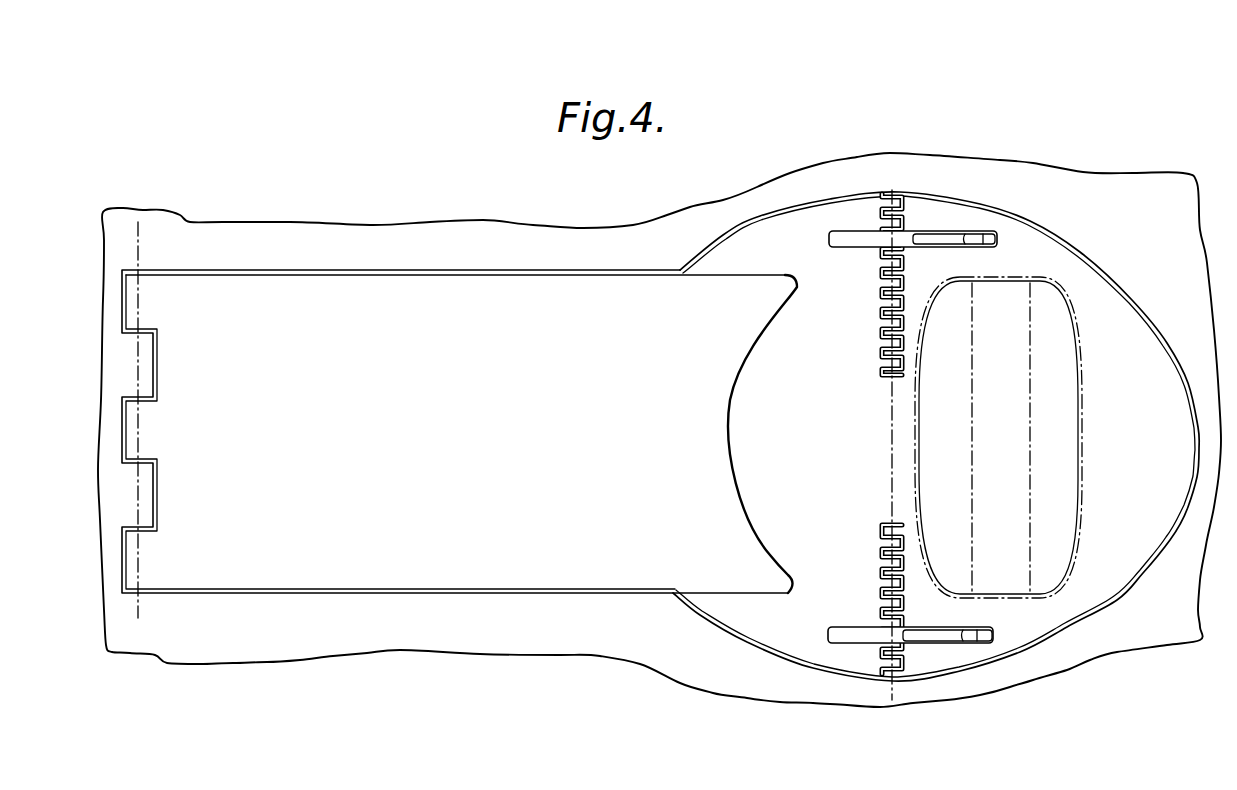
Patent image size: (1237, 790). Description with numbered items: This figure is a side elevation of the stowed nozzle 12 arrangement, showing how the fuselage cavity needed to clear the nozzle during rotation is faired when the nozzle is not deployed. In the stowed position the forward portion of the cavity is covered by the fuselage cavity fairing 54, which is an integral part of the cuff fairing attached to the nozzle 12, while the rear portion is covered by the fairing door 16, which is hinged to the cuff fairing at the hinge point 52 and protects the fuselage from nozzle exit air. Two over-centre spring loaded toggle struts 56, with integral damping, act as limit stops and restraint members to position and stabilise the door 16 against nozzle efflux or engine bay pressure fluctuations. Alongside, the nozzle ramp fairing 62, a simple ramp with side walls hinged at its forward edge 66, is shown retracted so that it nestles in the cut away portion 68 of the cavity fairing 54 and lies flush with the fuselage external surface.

The nozzle 12 is at (1057, 533).
The fairing door 16 is at (1043, 259).
The hinge point 52 is at (893, 196).
The fuselage cavity fairing 54 is at (752, 248).
The over-centre spring loaded toggle struts 56 is at (984, 234).
The nozzle ramp fairing 62 is at (424, 307).
The forward edge 66 is at (141, 268).
The cut away portion 68 is at (784, 563).